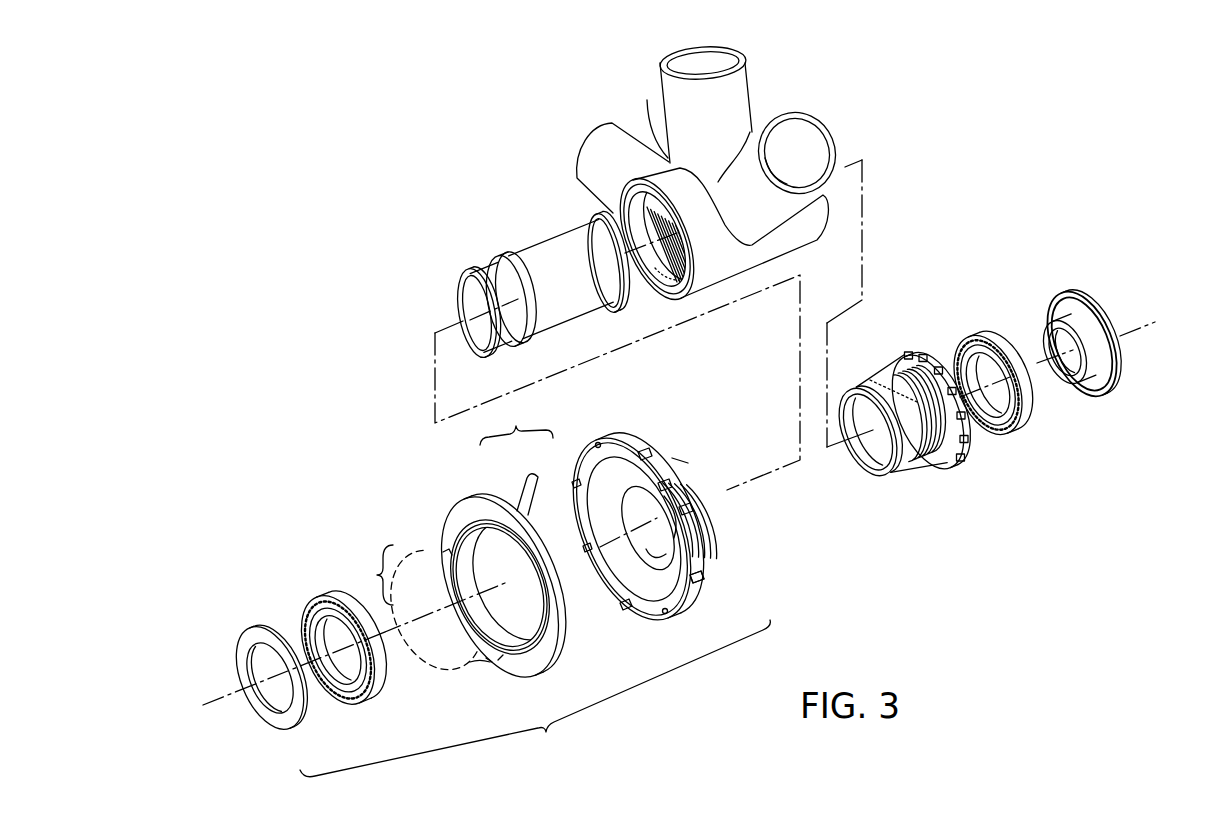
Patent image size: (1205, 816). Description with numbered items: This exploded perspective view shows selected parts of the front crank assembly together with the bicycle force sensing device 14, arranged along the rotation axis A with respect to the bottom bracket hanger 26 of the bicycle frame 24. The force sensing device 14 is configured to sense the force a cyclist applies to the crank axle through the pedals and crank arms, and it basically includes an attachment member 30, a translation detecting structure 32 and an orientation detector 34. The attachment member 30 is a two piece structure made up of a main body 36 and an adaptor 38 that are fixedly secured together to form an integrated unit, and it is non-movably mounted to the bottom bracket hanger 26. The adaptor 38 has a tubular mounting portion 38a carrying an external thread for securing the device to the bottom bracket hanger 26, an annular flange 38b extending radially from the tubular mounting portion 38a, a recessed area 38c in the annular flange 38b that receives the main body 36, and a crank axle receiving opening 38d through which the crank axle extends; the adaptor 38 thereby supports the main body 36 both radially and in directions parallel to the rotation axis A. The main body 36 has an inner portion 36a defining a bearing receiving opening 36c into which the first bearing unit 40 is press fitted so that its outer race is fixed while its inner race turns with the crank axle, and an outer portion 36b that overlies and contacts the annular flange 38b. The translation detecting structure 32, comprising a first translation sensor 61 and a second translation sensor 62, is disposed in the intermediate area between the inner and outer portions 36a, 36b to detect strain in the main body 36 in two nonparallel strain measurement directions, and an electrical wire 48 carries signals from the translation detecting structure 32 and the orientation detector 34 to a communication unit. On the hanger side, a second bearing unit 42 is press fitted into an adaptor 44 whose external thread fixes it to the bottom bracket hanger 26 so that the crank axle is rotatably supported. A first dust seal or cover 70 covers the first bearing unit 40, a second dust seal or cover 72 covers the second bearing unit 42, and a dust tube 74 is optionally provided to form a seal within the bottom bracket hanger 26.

The bicycle force sensing device 14 is at (535, 698).
The bicycle frame 24 is at (748, 81).
The bottom bracket hanger 26 is at (802, 232).
The attachment member 30 is at (516, 423).
The translation detecting structure 32 is at (423, 615).
The orientation detector 34 is at (490, 661).
The main body 36 is at (518, 568).
The inner portion 36a is at (563, 597).
The outer portion 36b is at (537, 652).
The bearing receiving opening 36c is at (510, 638).
The adaptor 38 is at (657, 533).
The tubular mounting portion 38a is at (712, 530).
The annular flange 38b is at (700, 562).
The recessed area 38c is at (634, 442).
The crank axle receiving opening 38d is at (652, 562).
The first bearing unit 40 is at (377, 668).
The second bearing unit 42 is at (995, 341).
The adaptor 44 is at (888, 368).
The electrical wire 48 is at (540, 488).
The first translation sensor 61 is at (416, 618).
The second translation sensor 62 is at (445, 554).
The first dust seal or cover 70 is at (252, 641).
The second dust seal or cover 72 is at (1080, 304).
The dust tube 74 is at (556, 262).
The rotation axis A is at (215, 700).